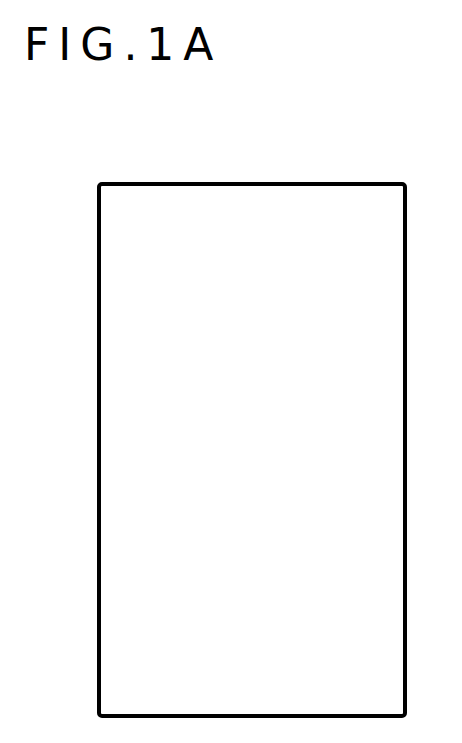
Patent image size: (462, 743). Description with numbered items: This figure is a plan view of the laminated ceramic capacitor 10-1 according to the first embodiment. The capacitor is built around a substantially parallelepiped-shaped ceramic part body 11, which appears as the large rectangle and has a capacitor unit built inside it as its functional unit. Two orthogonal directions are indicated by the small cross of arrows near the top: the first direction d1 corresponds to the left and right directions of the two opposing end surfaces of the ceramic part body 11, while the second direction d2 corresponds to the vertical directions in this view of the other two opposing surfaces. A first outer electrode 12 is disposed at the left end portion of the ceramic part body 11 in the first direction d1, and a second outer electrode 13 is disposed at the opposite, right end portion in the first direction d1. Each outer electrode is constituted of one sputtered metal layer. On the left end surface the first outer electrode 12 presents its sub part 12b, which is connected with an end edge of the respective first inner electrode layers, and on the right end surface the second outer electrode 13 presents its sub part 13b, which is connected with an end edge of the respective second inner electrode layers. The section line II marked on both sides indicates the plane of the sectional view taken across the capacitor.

The laminated ceramic capacitor 10-1 is at (144, 178).
The ceramic part body 11 is at (250, 184).
The first outer electrode 12 is at (97, 293).
The second outer electrode 13 is at (407, 290).
The sub part 12b is at (97, 543).
The sub part 13b is at (407, 542).
The section line II- II is at (67, 427).
The first direction d1 is at (346, 158).
The second direction d2 is at (361, 174).